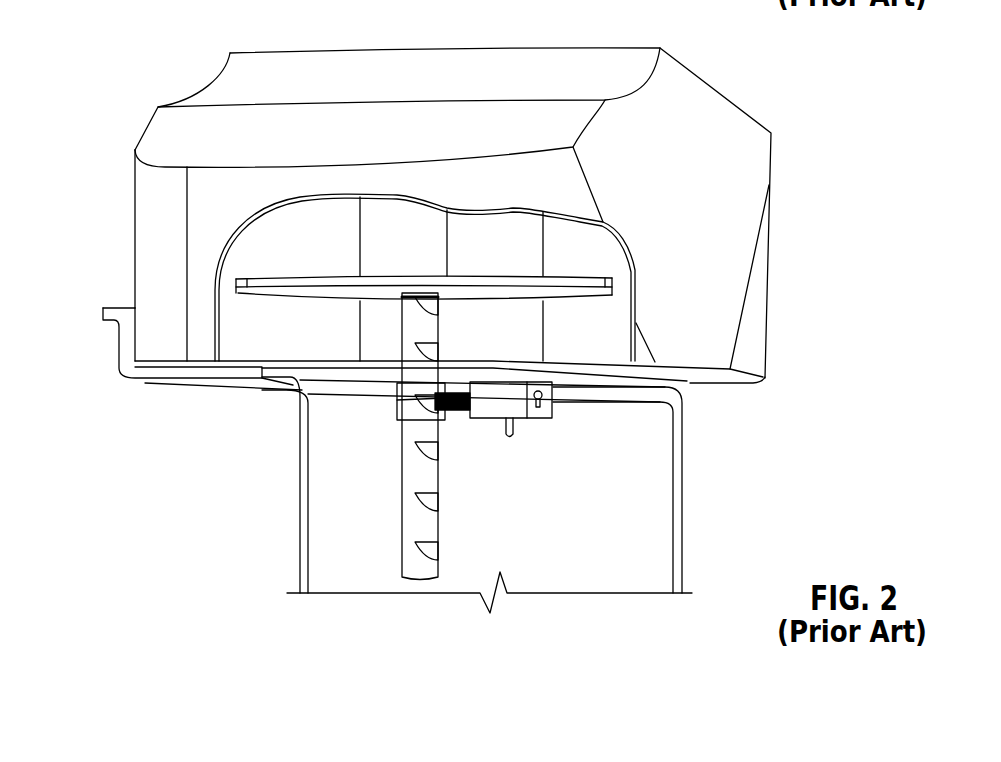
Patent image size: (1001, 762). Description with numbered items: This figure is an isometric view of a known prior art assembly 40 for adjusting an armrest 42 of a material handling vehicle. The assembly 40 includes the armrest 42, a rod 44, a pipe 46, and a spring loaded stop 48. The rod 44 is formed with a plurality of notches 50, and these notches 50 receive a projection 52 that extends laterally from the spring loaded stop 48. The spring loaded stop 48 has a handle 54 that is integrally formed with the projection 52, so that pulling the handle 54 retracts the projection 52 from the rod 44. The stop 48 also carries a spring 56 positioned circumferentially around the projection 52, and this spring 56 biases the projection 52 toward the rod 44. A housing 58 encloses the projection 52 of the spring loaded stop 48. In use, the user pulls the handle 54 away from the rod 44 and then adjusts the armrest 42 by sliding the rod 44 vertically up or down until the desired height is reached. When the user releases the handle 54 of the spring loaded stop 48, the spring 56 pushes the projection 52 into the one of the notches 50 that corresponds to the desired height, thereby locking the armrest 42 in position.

The assembly 40 is at (92, 33).
The armrest 42 is at (672, 218).
The rod 44 is at (415, 470).
The pipe 46 is at (397, 412).
The spring loaded stop 48 is at (560, 413).
The notches 50 is at (445, 500).
The projection 52 is at (397, 405).
The handle 54 is at (510, 430).
The spring 56 is at (435, 402).
The housing 58 is at (549, 394).